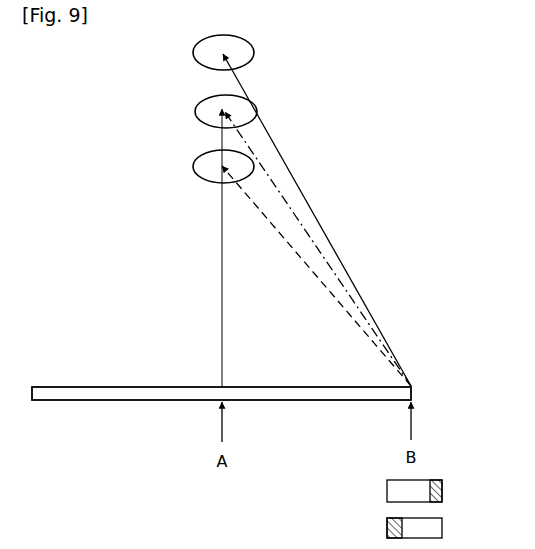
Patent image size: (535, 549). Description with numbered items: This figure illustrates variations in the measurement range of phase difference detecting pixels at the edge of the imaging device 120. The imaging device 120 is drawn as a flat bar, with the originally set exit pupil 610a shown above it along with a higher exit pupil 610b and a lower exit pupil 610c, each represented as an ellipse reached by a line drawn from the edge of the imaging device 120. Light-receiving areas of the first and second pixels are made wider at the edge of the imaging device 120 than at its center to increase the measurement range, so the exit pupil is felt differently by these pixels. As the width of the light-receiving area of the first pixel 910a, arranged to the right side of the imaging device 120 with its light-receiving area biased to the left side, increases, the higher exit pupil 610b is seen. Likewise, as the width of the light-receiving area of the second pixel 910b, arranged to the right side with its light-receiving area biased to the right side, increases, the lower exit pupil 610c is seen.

The imaging device 120 is at (413, 392).
The exit pupil 610a is at (195, 111).
The exit pupil 610b is at (193, 54).
The exit pupil 610c is at (193, 164).
The first pixel 910a is at (442, 491).
The second pixel 910b is at (442, 528).